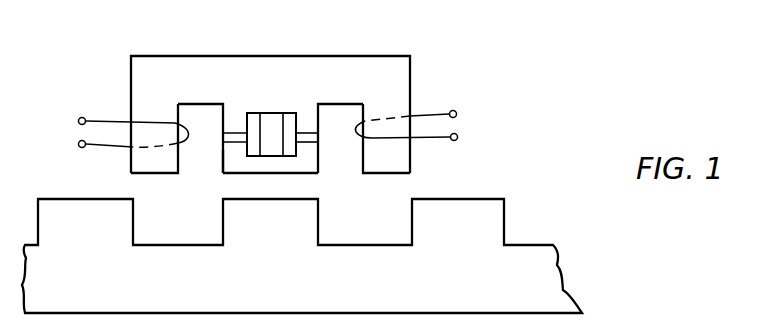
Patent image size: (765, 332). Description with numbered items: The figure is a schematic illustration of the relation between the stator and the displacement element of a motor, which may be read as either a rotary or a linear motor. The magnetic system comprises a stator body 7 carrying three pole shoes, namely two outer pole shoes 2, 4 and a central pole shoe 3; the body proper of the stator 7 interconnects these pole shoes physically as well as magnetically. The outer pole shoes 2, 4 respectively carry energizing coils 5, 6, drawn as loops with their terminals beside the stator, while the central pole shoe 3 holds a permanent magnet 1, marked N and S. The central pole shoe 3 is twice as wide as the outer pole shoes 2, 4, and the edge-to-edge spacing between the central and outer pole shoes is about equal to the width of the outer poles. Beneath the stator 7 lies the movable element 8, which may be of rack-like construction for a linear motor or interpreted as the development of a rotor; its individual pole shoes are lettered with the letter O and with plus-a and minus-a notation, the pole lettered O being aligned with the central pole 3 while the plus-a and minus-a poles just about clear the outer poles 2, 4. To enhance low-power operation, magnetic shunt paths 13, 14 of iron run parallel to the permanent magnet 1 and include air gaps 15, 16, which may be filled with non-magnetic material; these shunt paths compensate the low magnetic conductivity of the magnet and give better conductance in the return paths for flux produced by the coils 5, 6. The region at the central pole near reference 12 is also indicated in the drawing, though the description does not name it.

The permanent magnet 1 is at (278, 134).
The outer pole shoe 2 is at (143, 173).
The central pole shoe 3 is at (283, 174).
The outer pole shoe 4 is at (413, 172).
The energizing coil 5 is at (77, 132).
The energizing coil 6 is at (447, 128).
The stator body 7 is at (309, 55).
The movable element 8 is at (551, 244).
The central pole face 12 is at (218, 157).
The magnetic shunt path 13 is at (222, 166).
The magnetic shunt path 14 is at (313, 127).
The air gap 15 is at (223, 138).
The air gap 16 is at (312, 141).